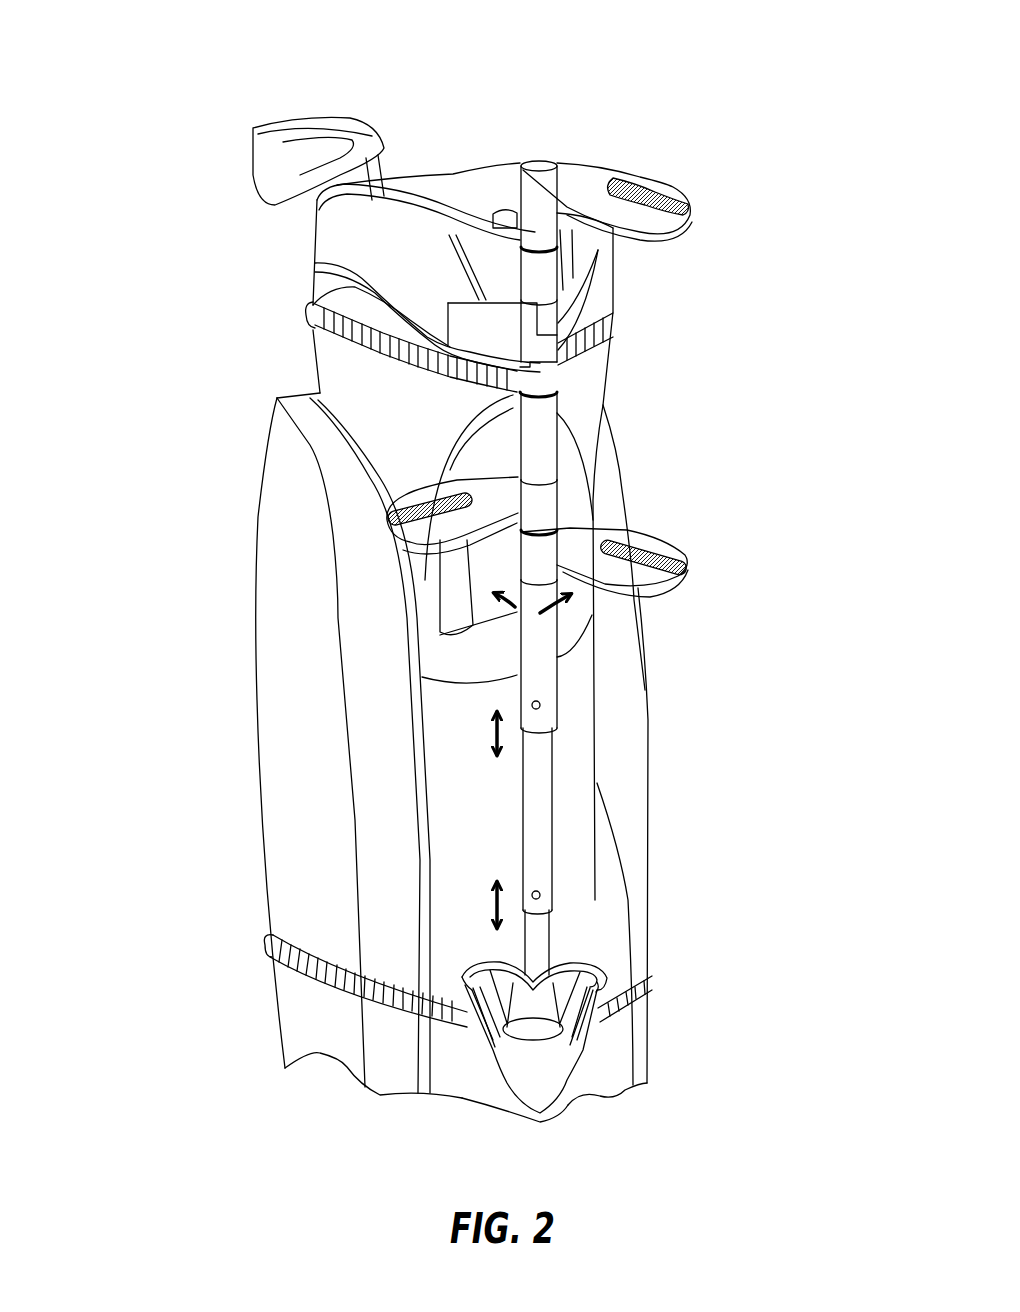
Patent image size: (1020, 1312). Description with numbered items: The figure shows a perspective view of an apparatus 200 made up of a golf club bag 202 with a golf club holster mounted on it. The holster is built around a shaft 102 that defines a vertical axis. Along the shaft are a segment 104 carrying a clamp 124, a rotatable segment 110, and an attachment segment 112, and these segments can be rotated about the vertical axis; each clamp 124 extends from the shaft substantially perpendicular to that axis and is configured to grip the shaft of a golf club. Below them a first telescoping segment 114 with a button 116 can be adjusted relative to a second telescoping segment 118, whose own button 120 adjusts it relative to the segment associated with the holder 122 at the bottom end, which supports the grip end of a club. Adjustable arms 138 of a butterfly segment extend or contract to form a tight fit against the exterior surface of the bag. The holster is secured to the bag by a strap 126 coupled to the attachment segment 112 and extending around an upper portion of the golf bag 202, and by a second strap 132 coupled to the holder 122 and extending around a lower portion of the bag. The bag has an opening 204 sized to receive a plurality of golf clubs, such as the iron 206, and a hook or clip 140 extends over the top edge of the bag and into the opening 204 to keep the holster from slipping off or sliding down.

The apparatus 200 is at (138, 44).
The golf club bag 202 is at (322, 380).
The opening 204 is at (397, 148).
The iron 206 is at (265, 178).
The shaft 102 is at (538, 168).
The segment 104 is at (523, 200).
The rotatable segment 110 is at (538, 383).
The attachment segment 112 is at (540, 410).
The first telescoping segment 114 is at (540, 650).
The button 116 is at (540, 708).
The second telescoping segment 118 is at (552, 813).
The button 120 is at (540, 897).
The holder 122 is at (541, 1083).
The clamp 124 is at (647, 170).
The strap 126 is at (538, 270).
The second strap 132 is at (268, 950).
The arms 138 is at (583, 302).
The hook or clip 140 is at (503, 213).